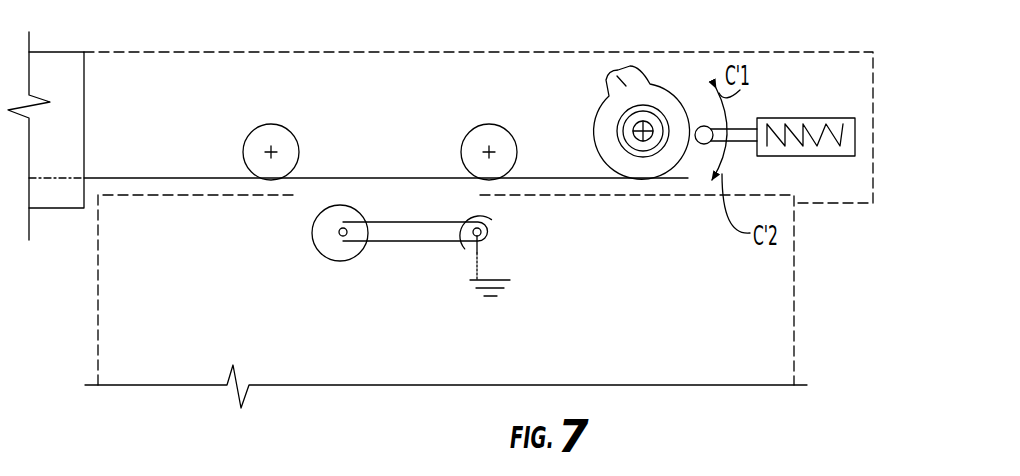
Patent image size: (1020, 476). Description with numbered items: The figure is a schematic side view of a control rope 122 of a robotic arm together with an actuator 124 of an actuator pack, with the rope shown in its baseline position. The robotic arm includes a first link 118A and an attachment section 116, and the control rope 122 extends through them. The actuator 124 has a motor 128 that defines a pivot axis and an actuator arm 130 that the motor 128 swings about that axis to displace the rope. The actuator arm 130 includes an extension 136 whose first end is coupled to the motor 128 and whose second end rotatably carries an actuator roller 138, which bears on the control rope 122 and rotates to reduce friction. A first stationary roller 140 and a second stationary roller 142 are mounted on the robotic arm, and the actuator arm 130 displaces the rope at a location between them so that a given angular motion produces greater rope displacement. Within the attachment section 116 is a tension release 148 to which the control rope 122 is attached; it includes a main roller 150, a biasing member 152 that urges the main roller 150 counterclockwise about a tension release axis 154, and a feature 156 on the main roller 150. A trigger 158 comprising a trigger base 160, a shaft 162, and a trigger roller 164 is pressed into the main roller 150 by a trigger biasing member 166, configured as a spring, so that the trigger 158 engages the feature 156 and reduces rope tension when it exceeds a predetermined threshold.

The first link 118A is at (52, 64).
The attachment section 116 is at (795, 62).
The control rope 122 is at (150, 178).
The actuator 124 is at (433, 350).
The motor 128 is at (500, 238).
The actuator arm 130 is at (429, 272).
The extension 136 is at (423, 238).
The actuator roller 138 is at (322, 258).
The first stationary roller 140 is at (276, 125).
The second stationary roller 142 is at (491, 125).
The tension release 148 is at (717, 58).
The main roller 150 is at (670, 95).
The biasing member 152 is at (617, 135).
The tension release axis 154 is at (646, 140).
The feature 156 is at (621, 80).
The trigger 158 is at (877, 137).
The trigger base 160 is at (845, 155).
The shaft 162 is at (741, 127).
The trigger roller 164 is at (698, 150).
The trigger biasing member 166 is at (805, 150).